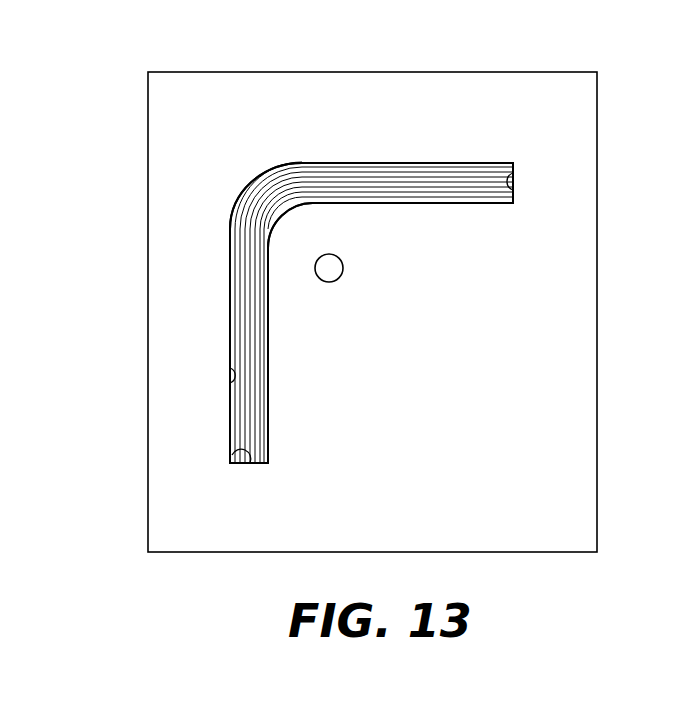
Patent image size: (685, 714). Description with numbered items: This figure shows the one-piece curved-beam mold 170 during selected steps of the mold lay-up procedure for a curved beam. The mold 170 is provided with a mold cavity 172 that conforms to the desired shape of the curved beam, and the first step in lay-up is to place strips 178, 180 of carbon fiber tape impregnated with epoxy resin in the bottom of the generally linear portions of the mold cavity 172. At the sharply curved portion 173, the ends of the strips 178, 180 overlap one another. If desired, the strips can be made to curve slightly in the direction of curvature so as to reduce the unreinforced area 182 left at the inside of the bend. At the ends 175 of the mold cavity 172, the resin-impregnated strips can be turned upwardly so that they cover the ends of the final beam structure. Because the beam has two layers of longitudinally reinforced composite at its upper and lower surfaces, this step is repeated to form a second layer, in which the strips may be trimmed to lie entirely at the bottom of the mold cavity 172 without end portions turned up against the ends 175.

The one-piece curved-beam mold 170 is at (173, 442).
The mold cavity 172 is at (240, 383).
The sharply curved portion 173 is at (238, 208).
The end of the mold cavity 175 is at (513, 176).
The strip 178 is at (243, 315).
The strip 180 is at (403, 180).
The unreinforced area 182 is at (277, 213).